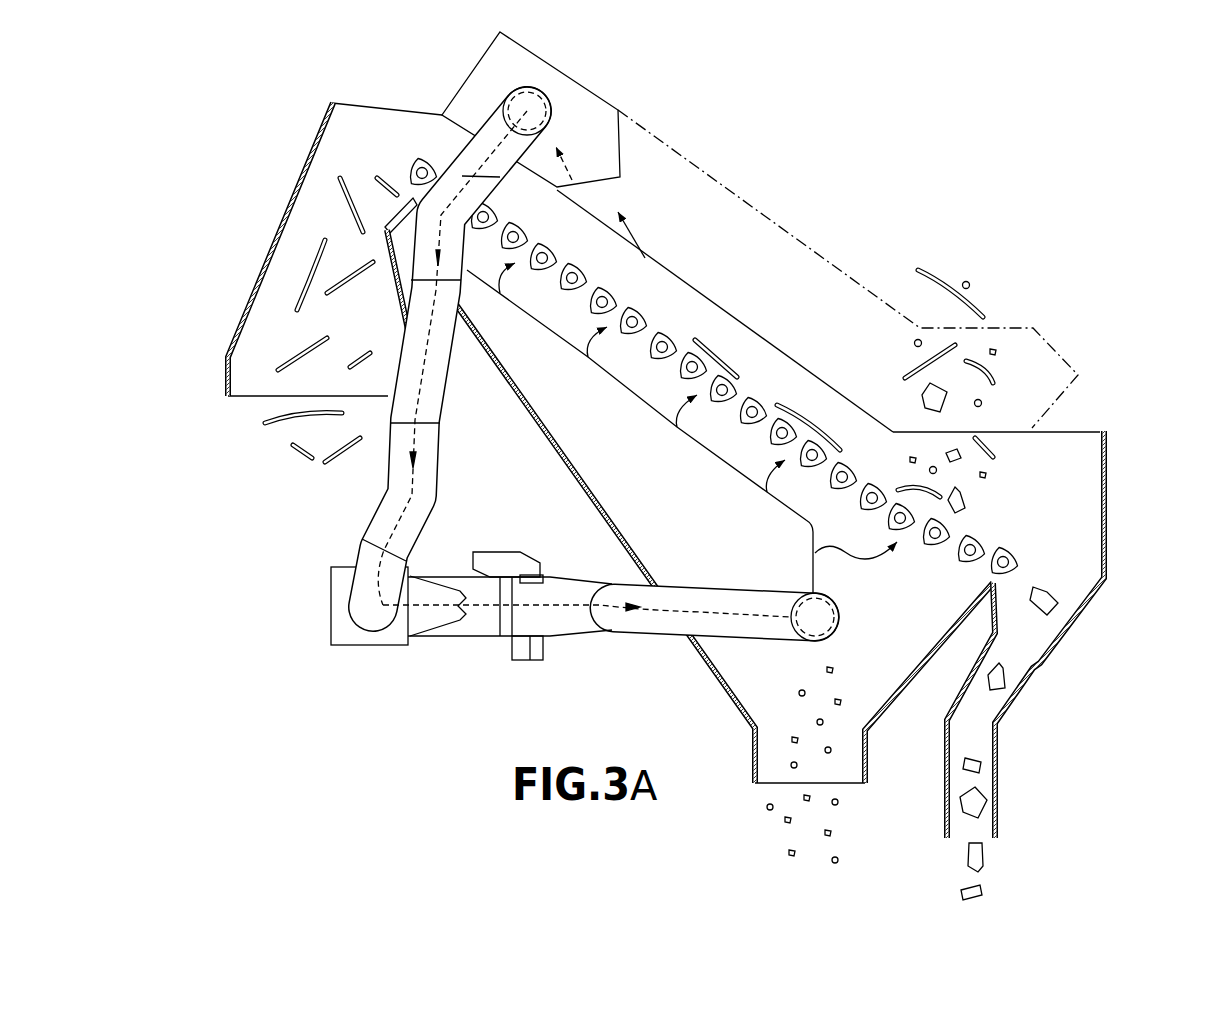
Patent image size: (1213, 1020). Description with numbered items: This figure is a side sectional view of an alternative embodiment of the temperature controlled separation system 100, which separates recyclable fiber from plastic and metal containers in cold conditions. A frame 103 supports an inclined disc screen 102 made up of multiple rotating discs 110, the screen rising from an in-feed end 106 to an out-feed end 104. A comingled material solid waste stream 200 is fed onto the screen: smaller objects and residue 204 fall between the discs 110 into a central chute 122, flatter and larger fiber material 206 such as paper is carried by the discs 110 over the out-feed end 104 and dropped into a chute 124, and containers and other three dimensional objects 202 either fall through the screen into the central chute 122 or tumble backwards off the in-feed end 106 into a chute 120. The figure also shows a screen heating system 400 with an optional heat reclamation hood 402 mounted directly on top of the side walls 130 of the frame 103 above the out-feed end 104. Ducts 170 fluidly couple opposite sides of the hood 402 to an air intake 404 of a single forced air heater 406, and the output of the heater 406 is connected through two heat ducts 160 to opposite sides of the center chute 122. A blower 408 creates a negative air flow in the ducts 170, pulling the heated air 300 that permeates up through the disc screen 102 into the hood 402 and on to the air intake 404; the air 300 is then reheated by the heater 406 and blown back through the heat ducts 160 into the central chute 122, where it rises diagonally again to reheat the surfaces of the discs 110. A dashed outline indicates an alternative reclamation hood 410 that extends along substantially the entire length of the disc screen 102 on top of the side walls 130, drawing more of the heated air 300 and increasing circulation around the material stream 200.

The temperature controlled separation system 100 is at (828, 225).
The disc screen 102 is at (662, 313).
The frame 103 is at (1112, 483).
The out-feed end 104 is at (413, 147).
The in-feed end 106 is at (1012, 527).
The discs 110 is at (757, 397).
The chute 120 is at (1000, 788).
The central chute 122 is at (730, 707).
The chute 124 is at (223, 377).
The side walls 130 is at (1080, 442).
The heat ducts 160 is at (772, 645).
The ducts 170 is at (440, 465).
The Material Solid Waste stream 200 is at (990, 302).
The containers and other three dimensional objects 202 is at (1047, 583).
The smaller objects and residue 204 is at (787, 855).
The fiber material 206 is at (357, 203).
The heated air 300 is at (630, 297).
The screen heating system 400 is at (320, 547).
The heat reclamation hood 402 is at (553, 63).
The air intake 404 is at (332, 605).
The forced air heater 406 is at (558, 645).
The blower 408 is at (465, 637).
The reclamation hood 410 is at (772, 220).